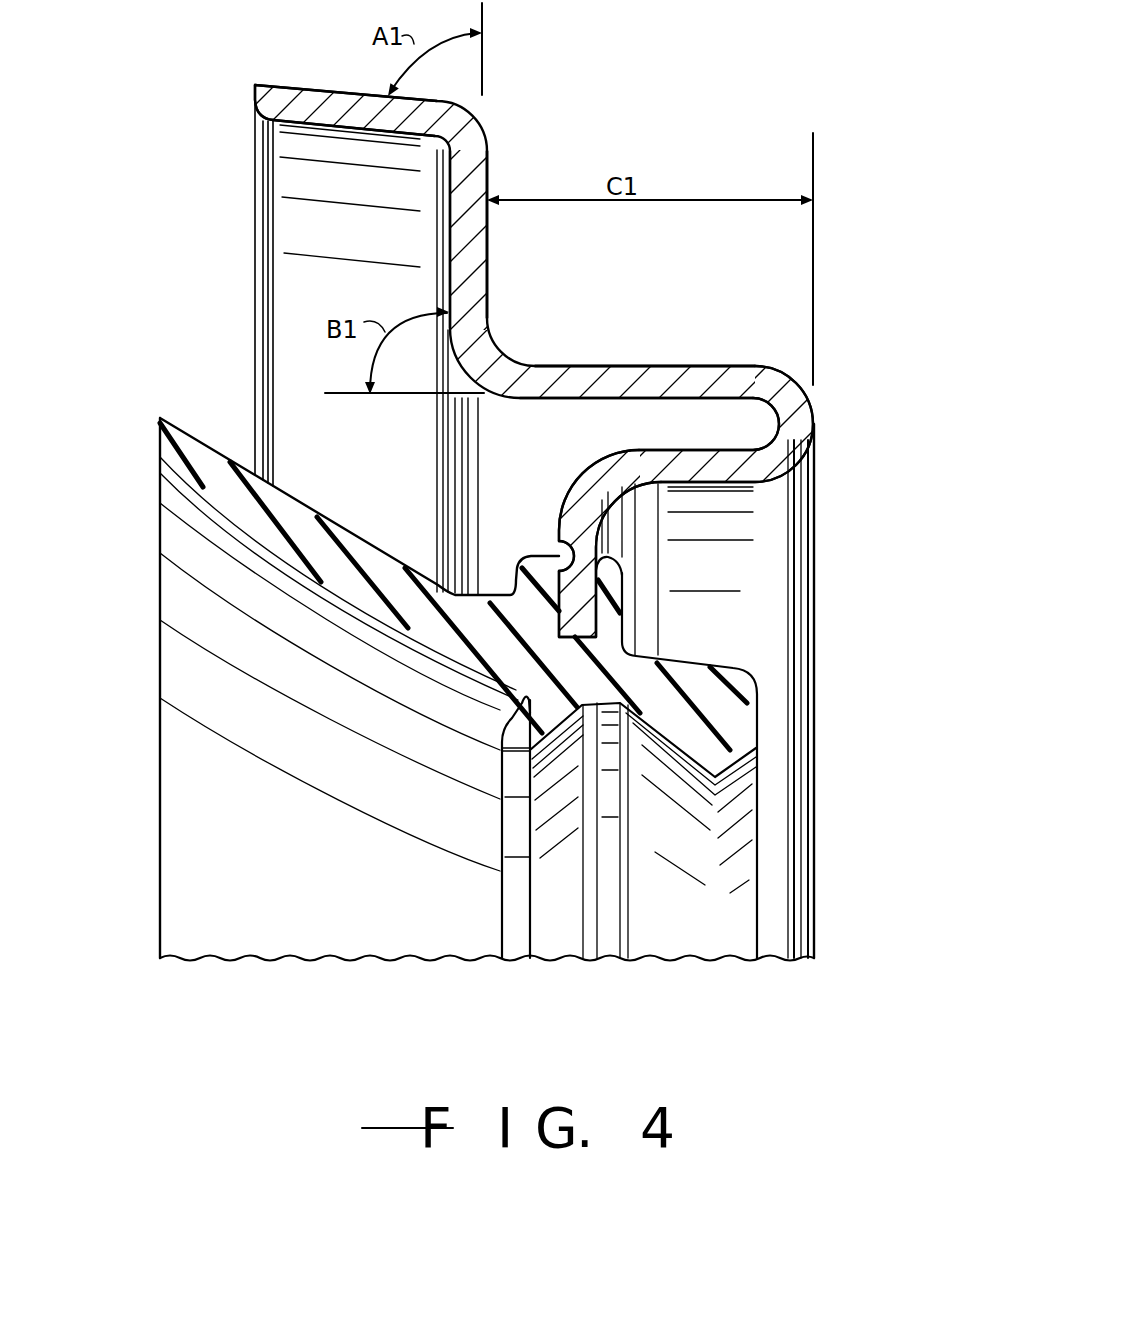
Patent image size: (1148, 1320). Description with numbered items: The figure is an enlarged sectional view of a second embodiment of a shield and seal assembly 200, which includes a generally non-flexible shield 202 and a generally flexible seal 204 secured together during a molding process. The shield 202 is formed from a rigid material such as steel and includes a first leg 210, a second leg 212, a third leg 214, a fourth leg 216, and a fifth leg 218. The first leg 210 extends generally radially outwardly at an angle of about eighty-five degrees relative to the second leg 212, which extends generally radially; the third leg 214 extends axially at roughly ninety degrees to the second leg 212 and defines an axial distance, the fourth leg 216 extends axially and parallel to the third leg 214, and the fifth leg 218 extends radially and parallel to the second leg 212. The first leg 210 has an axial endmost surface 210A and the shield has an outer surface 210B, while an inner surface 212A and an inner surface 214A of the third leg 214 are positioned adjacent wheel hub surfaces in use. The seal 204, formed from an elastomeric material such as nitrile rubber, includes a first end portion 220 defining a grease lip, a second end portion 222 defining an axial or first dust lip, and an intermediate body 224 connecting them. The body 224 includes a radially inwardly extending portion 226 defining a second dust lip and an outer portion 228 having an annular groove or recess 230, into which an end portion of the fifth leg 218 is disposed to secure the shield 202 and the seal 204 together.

The shield and seal assembly 200 is at (699, 272).
The shield 202 is at (817, 399).
The seal 204 is at (733, 665).
The first leg 210 is at (322, 101).
The axial endmost surface 210A is at (250, 92).
The outer surface 210B is at (312, 130).
The second leg 212 is at (478, 156).
The inner surface 212A is at (486, 241).
The third leg 214 is at (640, 382).
The inner surface 214A is at (563, 370).
The fourth leg 216 is at (750, 492).
The fifth leg 218 is at (572, 521).
The first end portion 220 is at (758, 754).
The second end portion 222 is at (160, 432).
The intermediate body 224 is at (528, 622).
The radially inwardly extending portion 226 is at (519, 750).
The outer portion 228 is at (613, 583).
The annular groove or recess 230 is at (558, 550).